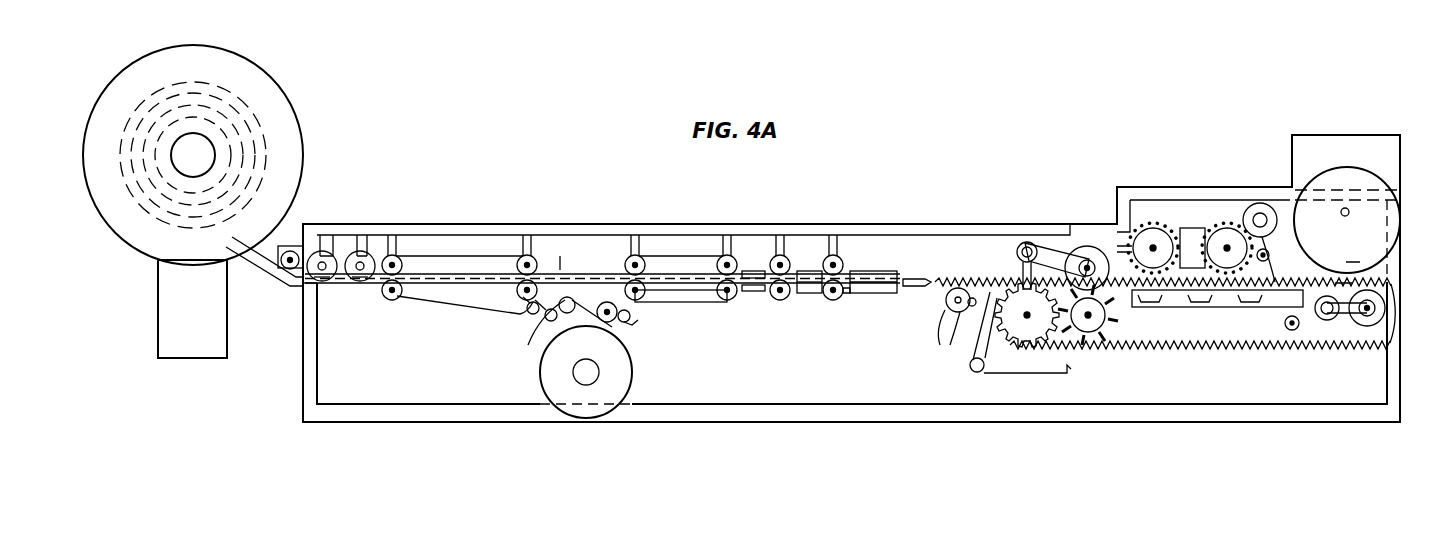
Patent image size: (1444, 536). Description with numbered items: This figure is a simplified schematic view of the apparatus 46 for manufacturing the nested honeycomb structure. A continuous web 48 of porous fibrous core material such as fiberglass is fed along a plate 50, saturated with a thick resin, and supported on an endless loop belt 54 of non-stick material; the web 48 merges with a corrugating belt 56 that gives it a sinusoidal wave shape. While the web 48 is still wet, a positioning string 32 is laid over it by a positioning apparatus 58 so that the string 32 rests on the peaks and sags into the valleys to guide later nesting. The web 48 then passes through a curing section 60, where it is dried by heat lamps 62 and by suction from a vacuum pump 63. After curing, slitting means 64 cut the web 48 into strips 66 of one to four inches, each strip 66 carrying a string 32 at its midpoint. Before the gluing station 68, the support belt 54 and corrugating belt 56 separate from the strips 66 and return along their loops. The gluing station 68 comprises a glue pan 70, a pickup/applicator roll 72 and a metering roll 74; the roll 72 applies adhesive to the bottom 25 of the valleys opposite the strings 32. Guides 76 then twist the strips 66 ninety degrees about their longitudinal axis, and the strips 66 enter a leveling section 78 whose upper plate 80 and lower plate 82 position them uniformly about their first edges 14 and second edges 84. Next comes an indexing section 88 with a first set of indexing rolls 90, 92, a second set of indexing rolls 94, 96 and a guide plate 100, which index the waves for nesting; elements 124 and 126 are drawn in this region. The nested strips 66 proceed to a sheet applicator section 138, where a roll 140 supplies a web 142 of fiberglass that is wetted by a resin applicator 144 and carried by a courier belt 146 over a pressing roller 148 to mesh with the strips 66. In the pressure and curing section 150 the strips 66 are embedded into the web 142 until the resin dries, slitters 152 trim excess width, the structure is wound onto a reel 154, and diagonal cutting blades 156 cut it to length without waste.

The first edges 14 is at (852, 302).
The bottom of the valleys 25 is at (935, 290).
The positioning string 32 is at (1272, 203).
The apparatus 46 is at (1018, 190).
The continuous web 48 is at (1340, 280).
The plate 50 is at (1350, 212).
The endless loop belt 54 is at (1003, 375).
The corrugating belt 56 is at (1020, 350).
The positioning apparatus 58 is at (1185, 205).
The curing section 60 is at (1186, 313).
The heat lamps 62 is at (1150, 307).
The vacuum pump 63 is at (1291, 332).
The slitting means 64 is at (1070, 243).
The strips 66 is at (562, 258).
The gluing station 68 is at (962, 318).
The glue pan 70 is at (945, 330).
The pickup/applicator roll 72 is at (945, 305).
The metering roll 74 is at (968, 290).
The guides 76 is at (928, 272).
The leveling section 78 is at (855, 250).
The upper plate 80 is at (860, 266).
The lower plate 82 is at (856, 300).
The second edges 84 is at (905, 262).
The indexing section 88 is at (798, 308).
The indexing roll 90 is at (833, 255).
The indexing roll 92 is at (818, 300).
The indexing roll 94 is at (763, 270).
The indexing roll 96 is at (780, 302).
The guide plate 100 is at (805, 270).
The upper conveyor section 124 is at (672, 250).
The lower conveyor section 126 is at (700, 303).
The sheet applicator section 138 is at (438, 208).
The roll 140 is at (632, 380).
The web 142 is at (548, 315).
The resin applicator 144 is at (675, 348).
The courier belt 146 is at (425, 302).
The pressing roller 148 is at (505, 300).
The pressure and curing section 150 is at (460, 252).
The slitters 152 is at (360, 250).
The reel 154 is at (199, 46).
The diagonal cutting blades 156 is at (322, 250).